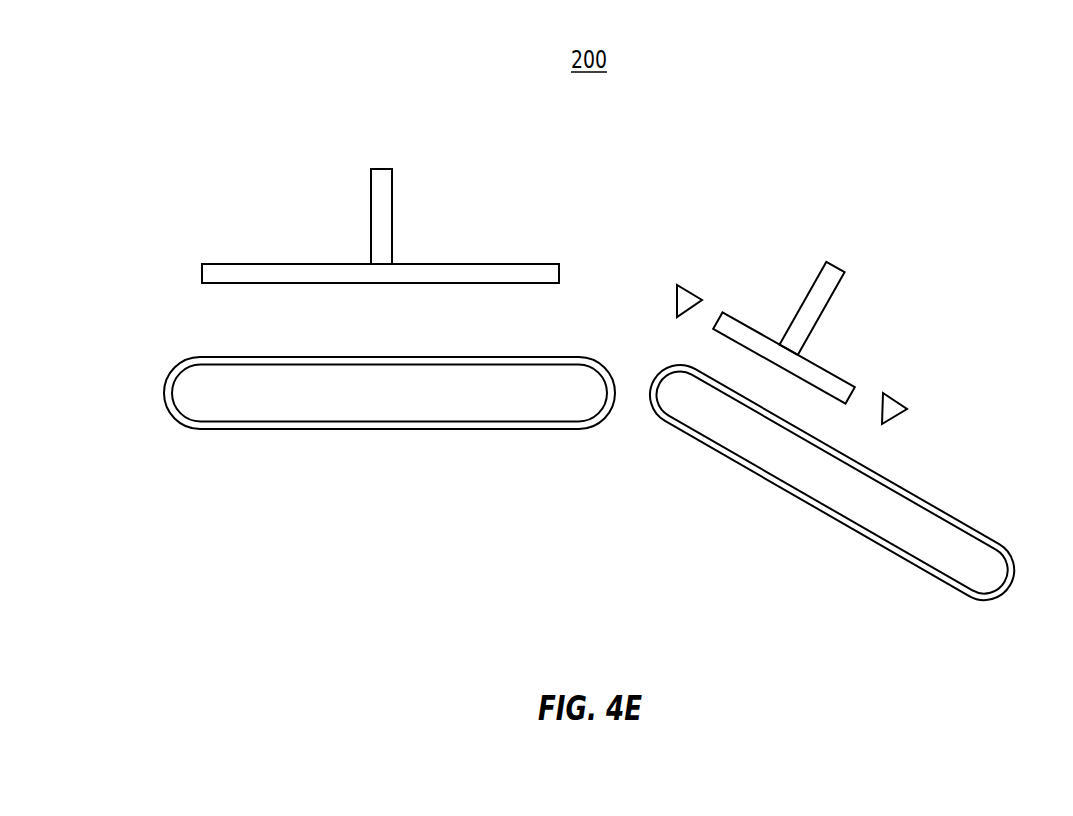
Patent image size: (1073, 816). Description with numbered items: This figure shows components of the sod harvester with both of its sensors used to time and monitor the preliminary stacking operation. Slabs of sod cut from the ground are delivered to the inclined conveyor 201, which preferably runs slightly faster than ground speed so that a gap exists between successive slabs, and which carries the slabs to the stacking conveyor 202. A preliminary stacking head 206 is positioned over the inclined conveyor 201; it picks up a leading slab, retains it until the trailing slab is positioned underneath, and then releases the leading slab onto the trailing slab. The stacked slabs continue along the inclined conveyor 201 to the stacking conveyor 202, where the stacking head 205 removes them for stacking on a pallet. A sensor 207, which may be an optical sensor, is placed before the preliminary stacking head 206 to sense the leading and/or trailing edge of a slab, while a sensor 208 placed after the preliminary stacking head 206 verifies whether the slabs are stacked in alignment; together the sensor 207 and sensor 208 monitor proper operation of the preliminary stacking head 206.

The inclined conveyor 201 is at (707, 447).
The stacking conveyor 202 is at (238, 428).
The stacking head 205 is at (370, 207).
The preliminary stacking head 206 is at (798, 315).
The sensor 207 is at (888, 395).
The sensor 208 is at (675, 292).